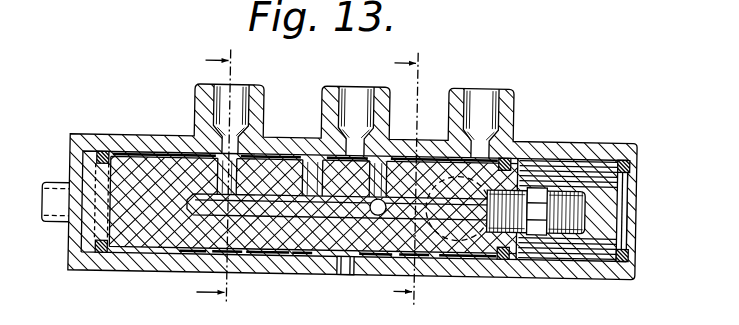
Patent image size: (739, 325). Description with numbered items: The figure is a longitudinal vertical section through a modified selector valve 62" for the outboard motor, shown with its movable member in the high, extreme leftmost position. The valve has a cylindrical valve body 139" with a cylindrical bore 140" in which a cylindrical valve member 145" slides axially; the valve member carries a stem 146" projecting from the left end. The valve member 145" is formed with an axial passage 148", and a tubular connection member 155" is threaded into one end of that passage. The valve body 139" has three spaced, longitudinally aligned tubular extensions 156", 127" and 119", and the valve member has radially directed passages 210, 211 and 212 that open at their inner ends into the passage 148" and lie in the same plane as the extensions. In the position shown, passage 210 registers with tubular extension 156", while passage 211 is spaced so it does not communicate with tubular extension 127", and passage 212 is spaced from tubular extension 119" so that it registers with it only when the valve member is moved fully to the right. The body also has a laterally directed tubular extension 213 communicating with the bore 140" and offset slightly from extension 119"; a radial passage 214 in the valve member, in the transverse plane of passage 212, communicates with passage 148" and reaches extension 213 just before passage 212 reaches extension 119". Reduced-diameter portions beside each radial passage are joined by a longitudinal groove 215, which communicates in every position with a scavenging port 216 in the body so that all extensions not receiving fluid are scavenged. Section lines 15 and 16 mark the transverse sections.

The stem 146 is at (66, 186).
The selector valve 62 is at (125, 138).
The radial passage 210 is at (208, 183).
The radial passage 211 is at (300, 176).
The radial passage 212 is at (408, 176).
The section line 15- 15 is at (224, 176).
The section line 16- 16 is at (414, 179).
The tubular extension 156 is at (256, 99).
The tubular extension 127 is at (383, 100).
The tubular extension 119 is at (510, 100).
The valve body 139 is at (565, 139).
The cylindrical bore 140 is at (551, 255).
The tubular connection member 155 is at (586, 208).
The valve member 145 is at (153, 241).
The axial passage 148 is at (279, 212).
The longitudinal groove 215 is at (322, 252).
The scavenging port 216 is at (347, 276).
The radial passage 214 is at (380, 216).
The tubular extension 213 is at (468, 246).